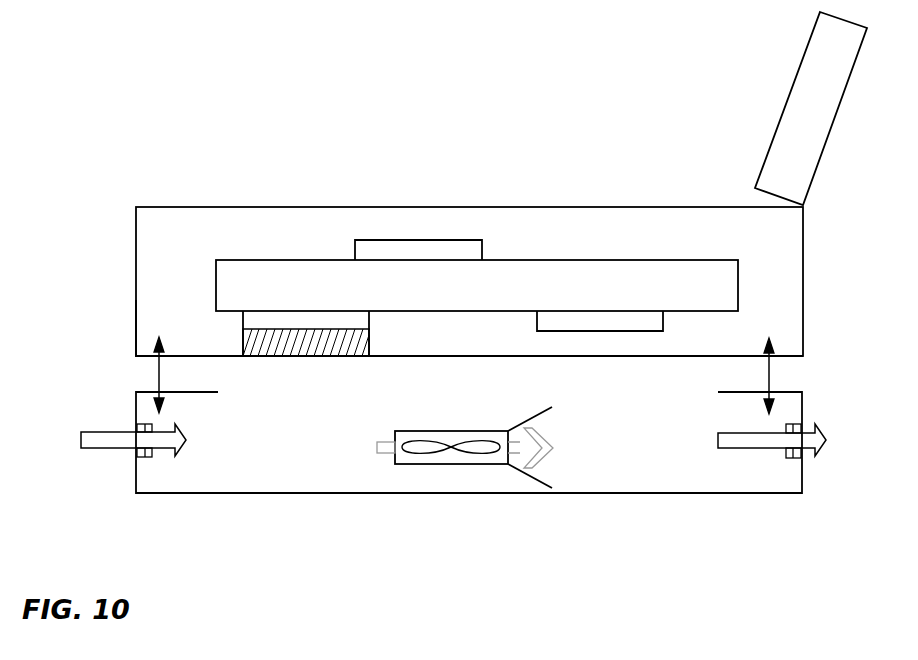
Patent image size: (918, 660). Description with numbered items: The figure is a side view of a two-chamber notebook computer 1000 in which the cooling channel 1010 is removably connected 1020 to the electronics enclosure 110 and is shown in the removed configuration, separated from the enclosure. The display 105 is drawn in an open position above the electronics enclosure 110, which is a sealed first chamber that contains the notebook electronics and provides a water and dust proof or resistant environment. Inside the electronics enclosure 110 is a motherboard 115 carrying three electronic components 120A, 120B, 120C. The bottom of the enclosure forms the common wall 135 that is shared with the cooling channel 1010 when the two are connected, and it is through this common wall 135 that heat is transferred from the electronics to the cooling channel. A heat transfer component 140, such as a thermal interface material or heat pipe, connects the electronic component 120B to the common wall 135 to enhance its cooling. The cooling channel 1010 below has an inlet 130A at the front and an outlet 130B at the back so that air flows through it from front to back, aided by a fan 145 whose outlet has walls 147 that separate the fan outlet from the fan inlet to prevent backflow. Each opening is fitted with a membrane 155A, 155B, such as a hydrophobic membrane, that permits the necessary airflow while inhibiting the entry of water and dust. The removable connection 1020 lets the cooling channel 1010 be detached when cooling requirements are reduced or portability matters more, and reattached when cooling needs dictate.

The two-chamber notebook computer 1000 is at (104, 163).
The display 105 is at (786, 107).
The first chamber 110 is at (136, 284).
The motherboard 115 is at (216, 290).
The electronic component 120A is at (355, 251).
The electronic component 120B is at (370, 314).
The electronic component 120C is at (663, 313).
The common wall 135 is at (496, 355).
The heat transfer component 140 is at (243, 346).
The fan 145 is at (458, 466).
The walls 147 is at (540, 481).
The cooling channel 1010 is at (470, 494).
The removable connection 1020 is at (157, 382).
The inlet 130A is at (140, 452).
The outlet 130B is at (799, 452).
The membrane 155A is at (149, 457).
The membrane 155B is at (787, 454).